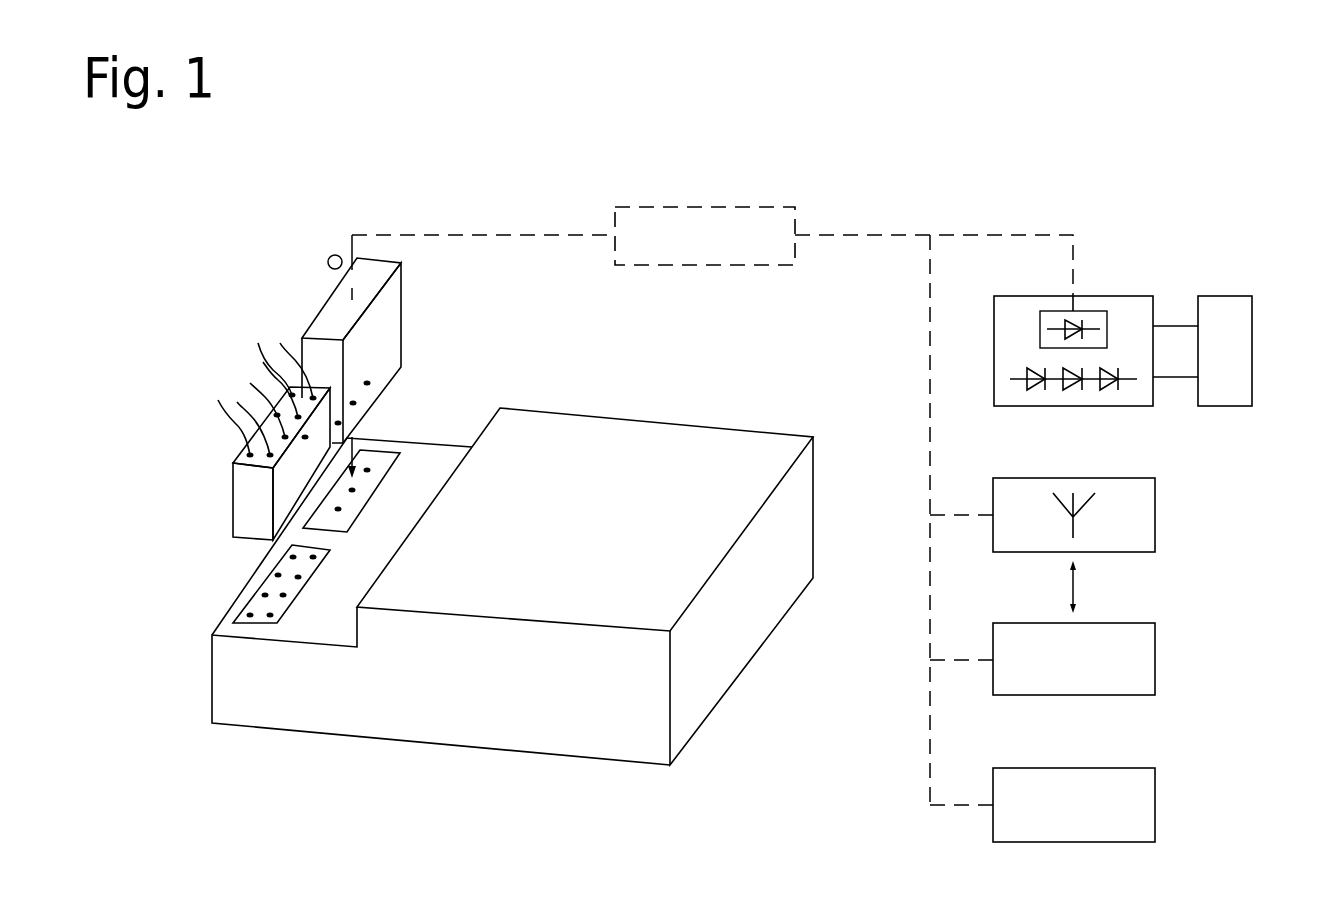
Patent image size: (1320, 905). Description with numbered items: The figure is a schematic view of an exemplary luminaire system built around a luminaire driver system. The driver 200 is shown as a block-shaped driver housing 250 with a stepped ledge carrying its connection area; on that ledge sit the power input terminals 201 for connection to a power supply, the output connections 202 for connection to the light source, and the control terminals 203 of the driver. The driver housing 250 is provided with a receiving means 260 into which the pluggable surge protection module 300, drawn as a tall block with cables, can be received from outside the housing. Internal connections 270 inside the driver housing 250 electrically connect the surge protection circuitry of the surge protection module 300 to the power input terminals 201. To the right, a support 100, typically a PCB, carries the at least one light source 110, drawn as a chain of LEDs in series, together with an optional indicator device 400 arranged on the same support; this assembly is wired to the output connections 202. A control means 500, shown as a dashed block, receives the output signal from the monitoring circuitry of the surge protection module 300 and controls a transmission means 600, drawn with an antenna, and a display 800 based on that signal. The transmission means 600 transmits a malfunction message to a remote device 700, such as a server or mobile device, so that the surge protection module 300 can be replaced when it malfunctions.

The support 100 is at (1140, 296).
The light source 110 is at (1094, 392).
The driver 200 is at (629, 407).
The power input terminals 201 is at (326, 552).
The output connections 202 is at (281, 610).
The control terminals 203 is at (302, 574).
The driver housing 250 is at (742, 458).
The receiving means 260 is at (382, 464).
The internal connections 270 is at (360, 515).
The surge protection module 300 is at (422, 338).
The indicator device 400 is at (1095, 318).
The control means 500 is at (743, 215).
The transmission means 600 is at (1155, 502).
The remote device 700 is at (1155, 635).
The display 800 is at (1155, 783).